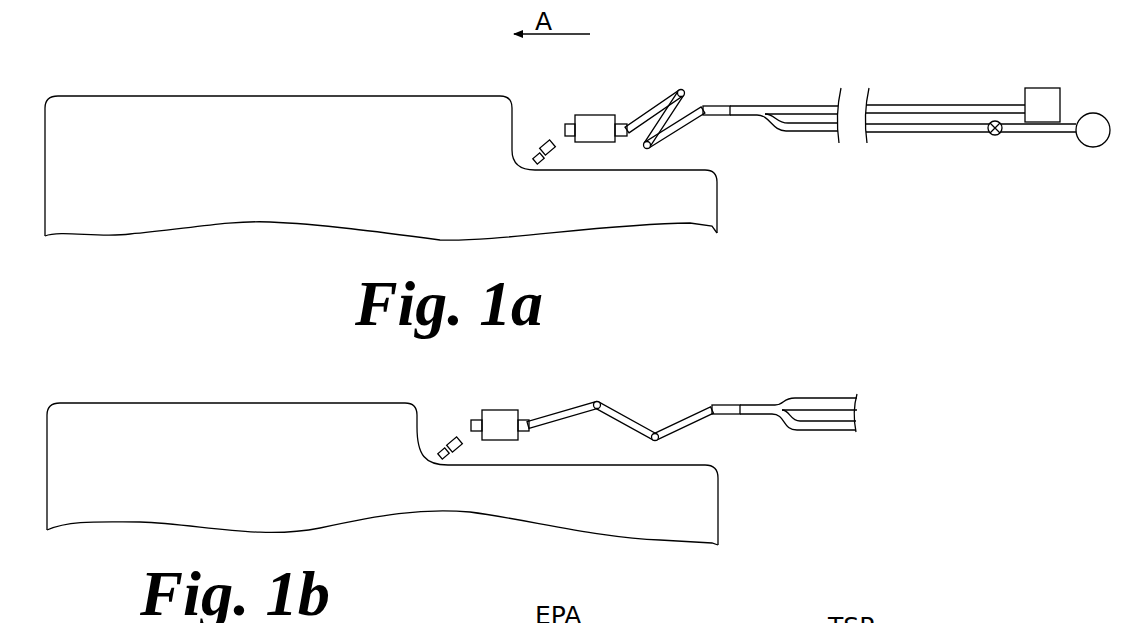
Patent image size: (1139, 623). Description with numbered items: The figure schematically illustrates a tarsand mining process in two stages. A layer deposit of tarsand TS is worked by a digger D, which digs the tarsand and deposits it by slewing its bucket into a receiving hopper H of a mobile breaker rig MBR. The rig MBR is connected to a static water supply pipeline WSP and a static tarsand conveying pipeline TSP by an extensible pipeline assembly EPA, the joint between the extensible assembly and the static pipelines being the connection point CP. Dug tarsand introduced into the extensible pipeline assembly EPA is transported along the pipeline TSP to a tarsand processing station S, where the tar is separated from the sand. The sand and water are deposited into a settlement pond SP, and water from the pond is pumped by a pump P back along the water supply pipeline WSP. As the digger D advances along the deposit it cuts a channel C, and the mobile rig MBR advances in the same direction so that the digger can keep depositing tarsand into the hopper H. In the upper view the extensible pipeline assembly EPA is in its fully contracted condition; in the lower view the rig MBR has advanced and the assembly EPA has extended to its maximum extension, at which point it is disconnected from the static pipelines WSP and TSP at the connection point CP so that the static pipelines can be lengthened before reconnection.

In FIG. 1A, the layer deposit of tarsand TS is at (289, 192).
In FIG. 1B, the layer deposit of tarsand TS is at (303, 484).
In FIG. 1A, the digger D is at (542, 141).
In FIG. 1B, the digger D is at (452, 439).
In FIG. 1A, the receiving hopper H is at (570, 123).
In FIG. 1B, the receiving hopper H is at (476, 420).
In FIG. 1A, the mobile breaker rig MBR is at (590, 118).
In FIG. 1B, the mobile breaker rig MBR is at (501, 418).
In FIG. 1A, the extensible pipeline assembly EPA is at (693, 96).
In FIG. 1B, the extensible pipeline assembly EPA is at (683, 396).
In FIG. 1A, the connection point CP is at (736, 116).
In FIG. 1B, the connection point CP is at (742, 409).
In FIG. 1A, the static tarsand conveying pipeline TSP is at (906, 104).
In FIG. 1B, the static tarsand conveying pipeline TSP is at (829, 402).
In FIG. 1A, the static water supply pipeline WSP is at (921, 131).
In FIG. 1B, the static water supply pipeline WSP is at (838, 431).
In FIG. 1A, the tarsand processing station S is at (1052, 118).
In FIG. 1A, the pump P is at (991, 135).
In FIG. 1A, the settlement pond SP is at (1093, 136).
In FIG. 1A, the channel C is at (704, 158).
In FIG. 1B, the channel C is at (704, 439).